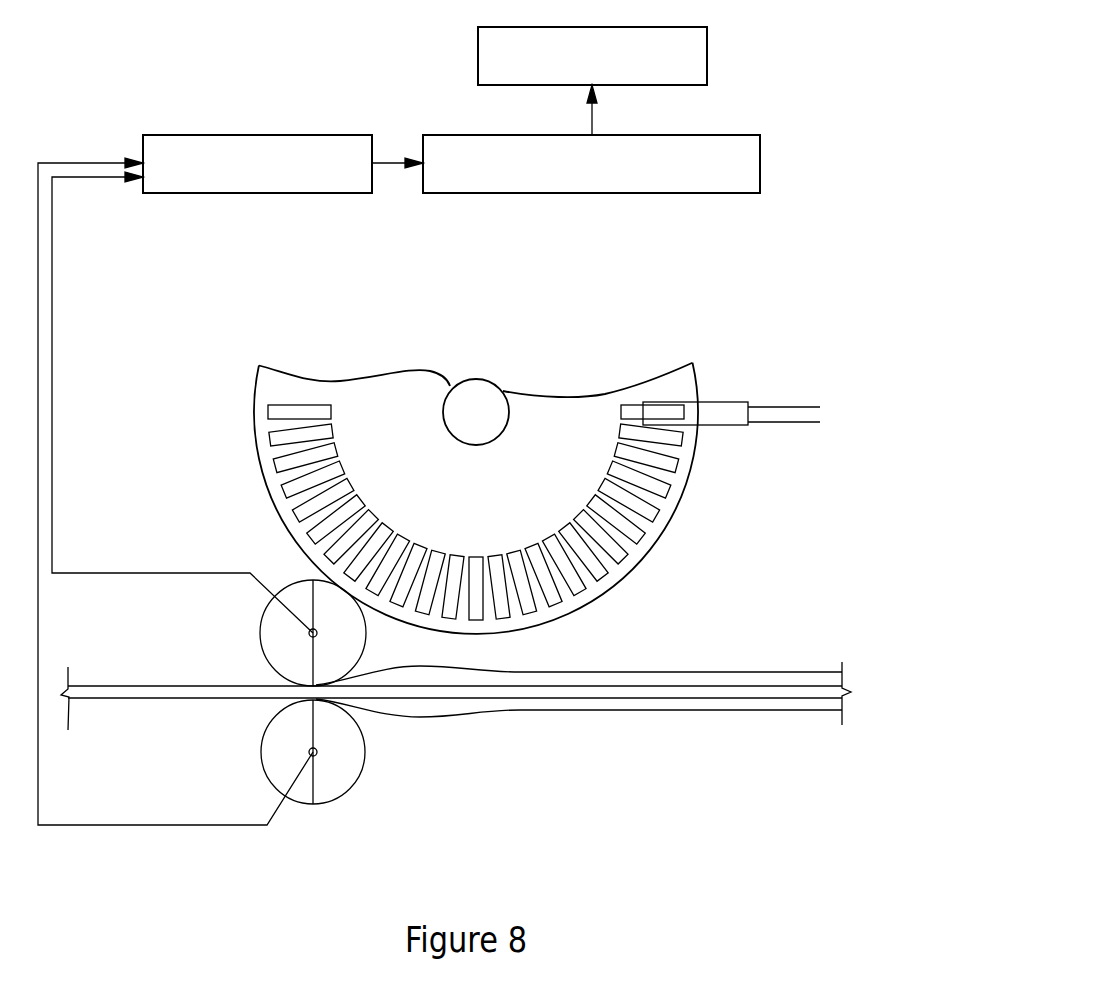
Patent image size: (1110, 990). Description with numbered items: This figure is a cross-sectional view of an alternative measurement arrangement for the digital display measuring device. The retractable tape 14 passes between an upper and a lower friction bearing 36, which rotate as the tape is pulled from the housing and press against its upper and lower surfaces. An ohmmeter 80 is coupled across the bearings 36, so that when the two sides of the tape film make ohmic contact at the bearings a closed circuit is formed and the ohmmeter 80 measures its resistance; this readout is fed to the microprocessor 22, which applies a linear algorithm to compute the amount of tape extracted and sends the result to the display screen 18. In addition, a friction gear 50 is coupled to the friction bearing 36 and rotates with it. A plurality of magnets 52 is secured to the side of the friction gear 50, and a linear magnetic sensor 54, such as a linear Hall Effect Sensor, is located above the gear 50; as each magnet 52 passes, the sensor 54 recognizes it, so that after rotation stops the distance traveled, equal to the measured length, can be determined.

The retractable tape 14 is at (185, 707).
The display screen 18 is at (592, 56).
The microprocessor 22 is at (591, 139).
The friction bearing 36 is at (260, 617).
The friction gear 50 is at (245, 459).
The magnets 52 is at (292, 520).
The linear magnetic sensor 54 is at (710, 420).
The ohmmeter 80 is at (230, 480).